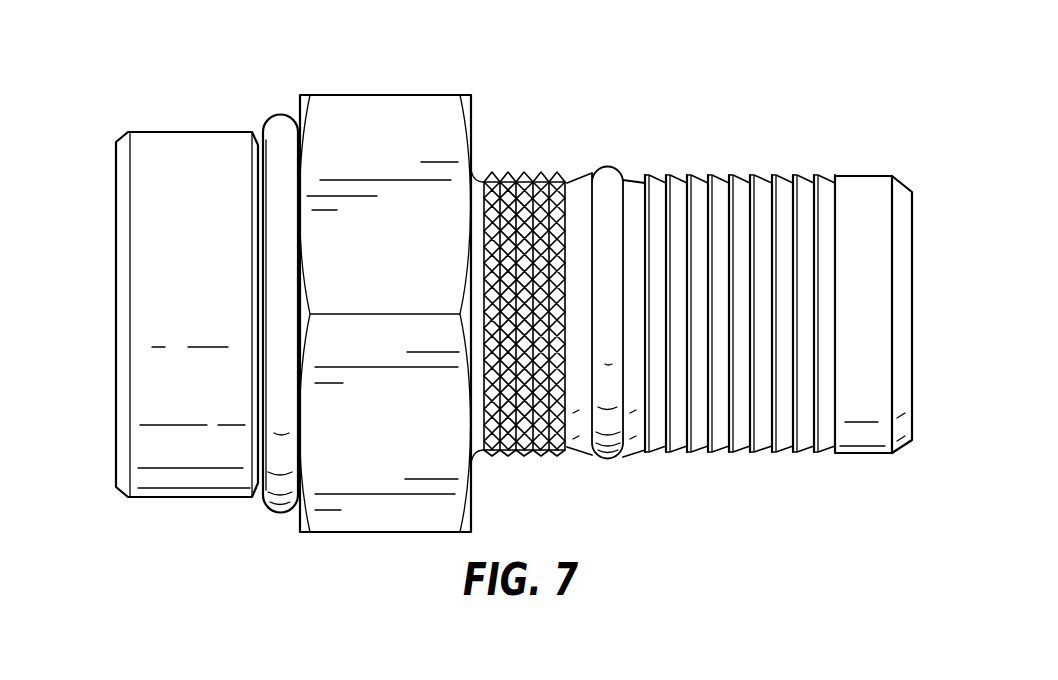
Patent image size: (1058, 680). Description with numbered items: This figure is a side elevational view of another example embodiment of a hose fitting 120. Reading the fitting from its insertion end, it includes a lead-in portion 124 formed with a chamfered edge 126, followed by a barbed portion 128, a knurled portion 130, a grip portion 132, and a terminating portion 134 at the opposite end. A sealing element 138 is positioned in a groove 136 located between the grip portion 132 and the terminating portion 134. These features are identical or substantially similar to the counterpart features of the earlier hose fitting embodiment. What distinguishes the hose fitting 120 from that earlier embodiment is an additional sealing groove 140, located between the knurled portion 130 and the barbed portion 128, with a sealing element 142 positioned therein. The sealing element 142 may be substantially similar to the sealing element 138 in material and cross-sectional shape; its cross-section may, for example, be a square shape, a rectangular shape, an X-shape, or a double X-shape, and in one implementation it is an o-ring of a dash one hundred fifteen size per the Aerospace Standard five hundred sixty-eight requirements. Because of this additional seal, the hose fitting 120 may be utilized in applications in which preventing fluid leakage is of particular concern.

The hose fitting 120 is at (137, 67).
The lead-in portion 124 is at (863, 175).
The chamfered edge 126 is at (900, 177).
The barbed portion 128 is at (717, 175).
The knurled portion 130 is at (522, 177).
The grip portion 132 is at (382, 93).
The terminating portion 134 is at (180, 130).
The groove 136 is at (285, 107).
The sealing element 138 is at (273, 513).
The sealing groove 140 is at (608, 160).
The sealing element 142 is at (607, 460).